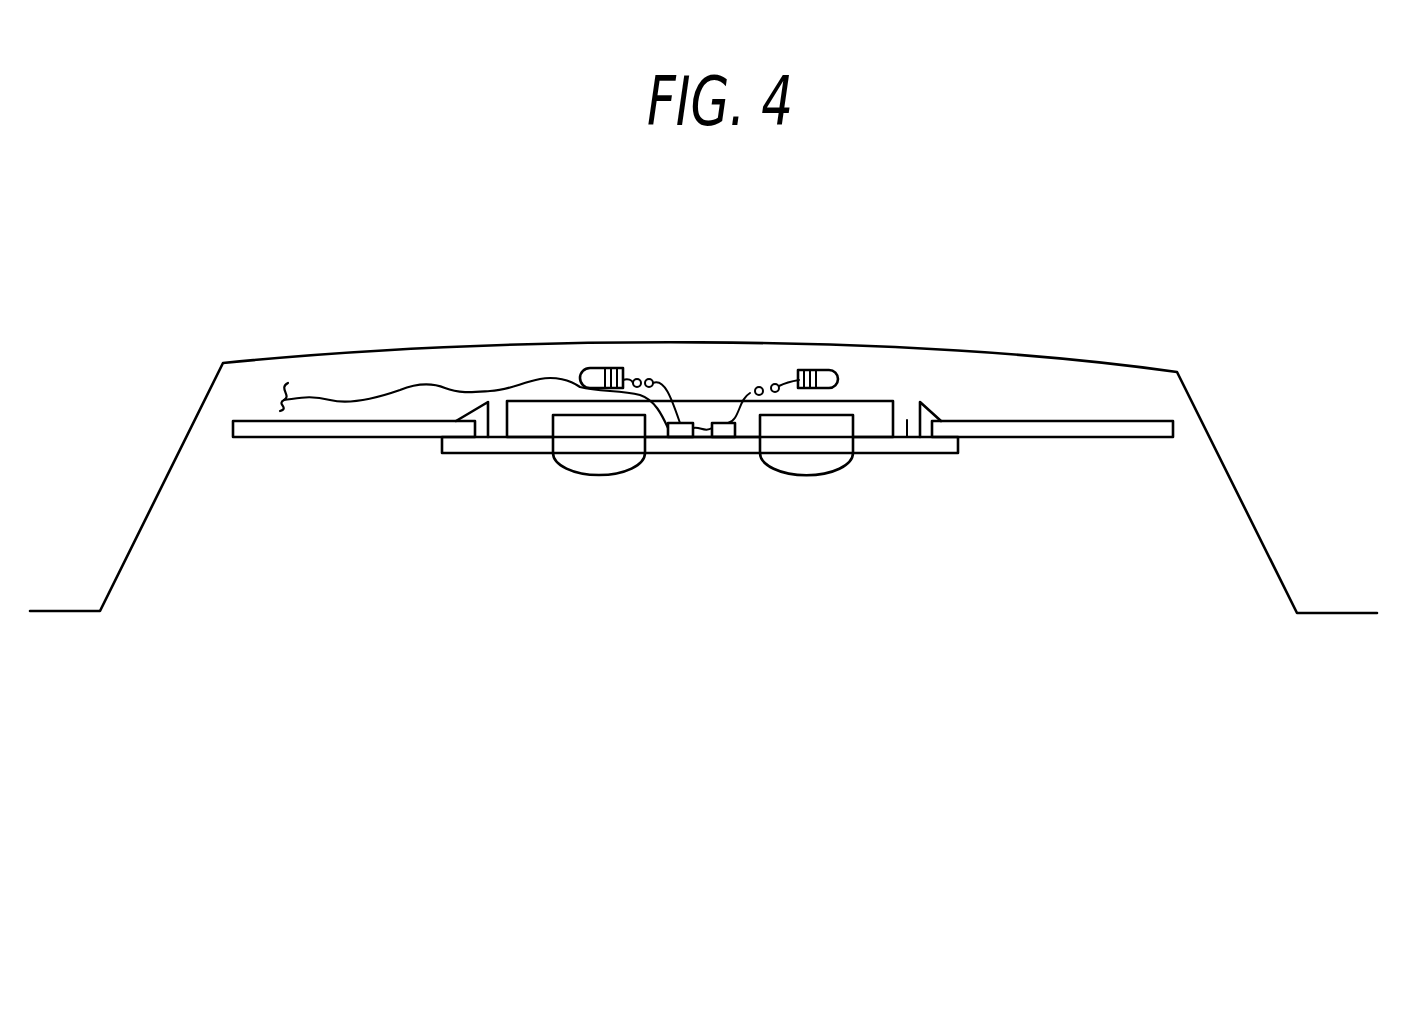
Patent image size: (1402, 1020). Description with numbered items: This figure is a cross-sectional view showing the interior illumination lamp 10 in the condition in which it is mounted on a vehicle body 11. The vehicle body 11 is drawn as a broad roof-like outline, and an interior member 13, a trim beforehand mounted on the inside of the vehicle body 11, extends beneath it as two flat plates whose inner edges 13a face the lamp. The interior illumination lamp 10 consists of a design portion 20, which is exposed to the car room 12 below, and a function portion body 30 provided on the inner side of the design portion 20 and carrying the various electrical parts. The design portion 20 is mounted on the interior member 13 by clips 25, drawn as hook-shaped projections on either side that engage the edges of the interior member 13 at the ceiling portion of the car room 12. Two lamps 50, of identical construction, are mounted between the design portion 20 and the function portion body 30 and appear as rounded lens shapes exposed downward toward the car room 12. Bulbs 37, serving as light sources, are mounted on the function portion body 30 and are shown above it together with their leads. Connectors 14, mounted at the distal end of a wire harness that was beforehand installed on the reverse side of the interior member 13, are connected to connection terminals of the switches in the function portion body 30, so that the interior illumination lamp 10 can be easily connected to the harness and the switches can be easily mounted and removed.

The interior illumination lamp 10 is at (548, 505).
The vehicle body 11 is at (1080, 350).
The car room 12 is at (735, 580).
The interior member 13 is at (1143, 438).
The opening edge of roof trim 13a is at (907, 420).
The connectors 14 is at (690, 422).
The design portion 20 is at (895, 465).
The clips 25 is at (476, 398).
The function portion body 30 is at (883, 392).
The bulbs 37 is at (597, 368).
The lamp 50 is at (640, 485).